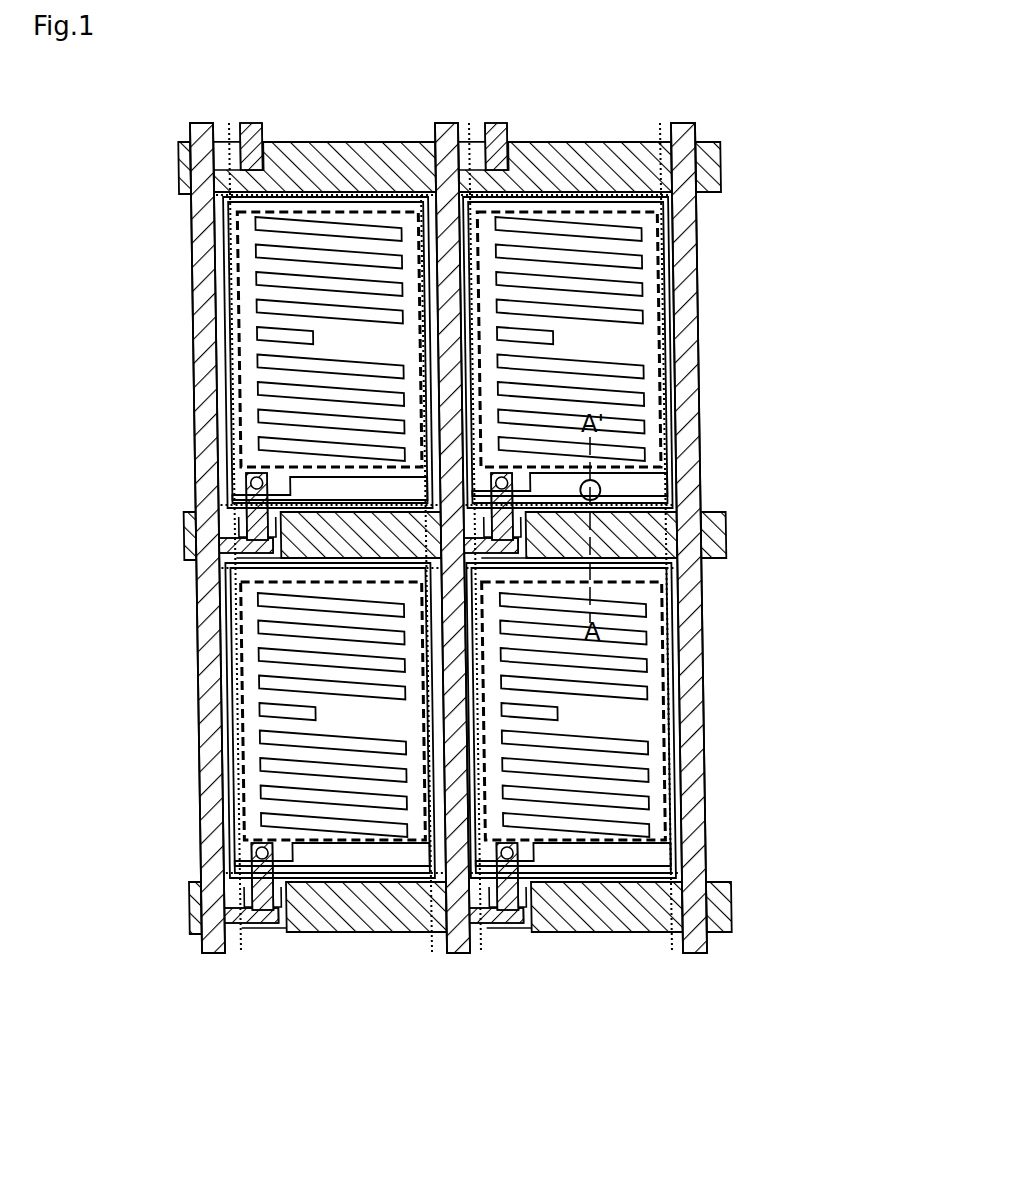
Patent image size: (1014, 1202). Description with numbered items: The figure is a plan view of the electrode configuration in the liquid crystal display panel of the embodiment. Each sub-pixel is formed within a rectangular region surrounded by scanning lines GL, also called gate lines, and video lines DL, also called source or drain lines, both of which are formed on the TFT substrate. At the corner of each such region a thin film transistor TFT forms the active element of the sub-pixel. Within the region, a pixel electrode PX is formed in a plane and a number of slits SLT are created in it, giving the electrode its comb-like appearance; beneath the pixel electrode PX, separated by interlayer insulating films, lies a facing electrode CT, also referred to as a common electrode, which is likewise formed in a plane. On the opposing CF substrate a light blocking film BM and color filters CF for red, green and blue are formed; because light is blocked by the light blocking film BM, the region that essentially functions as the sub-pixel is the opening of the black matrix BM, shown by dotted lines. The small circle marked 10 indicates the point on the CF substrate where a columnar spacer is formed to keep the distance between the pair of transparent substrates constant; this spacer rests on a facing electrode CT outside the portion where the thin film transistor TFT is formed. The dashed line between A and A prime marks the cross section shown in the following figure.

The pixel electrode PX is at (242, 255).
The slit SLT is at (258, 307).
The light blocking film BM is at (238, 372).
The point 10 is at (607, 485).
The facing electrode CT is at (650, 488).
The color filter CF is at (660, 170).
The scanning line GL is at (729, 877).
The video line DL is at (687, 950).
The thin film transistor TFT is at (282, 902).